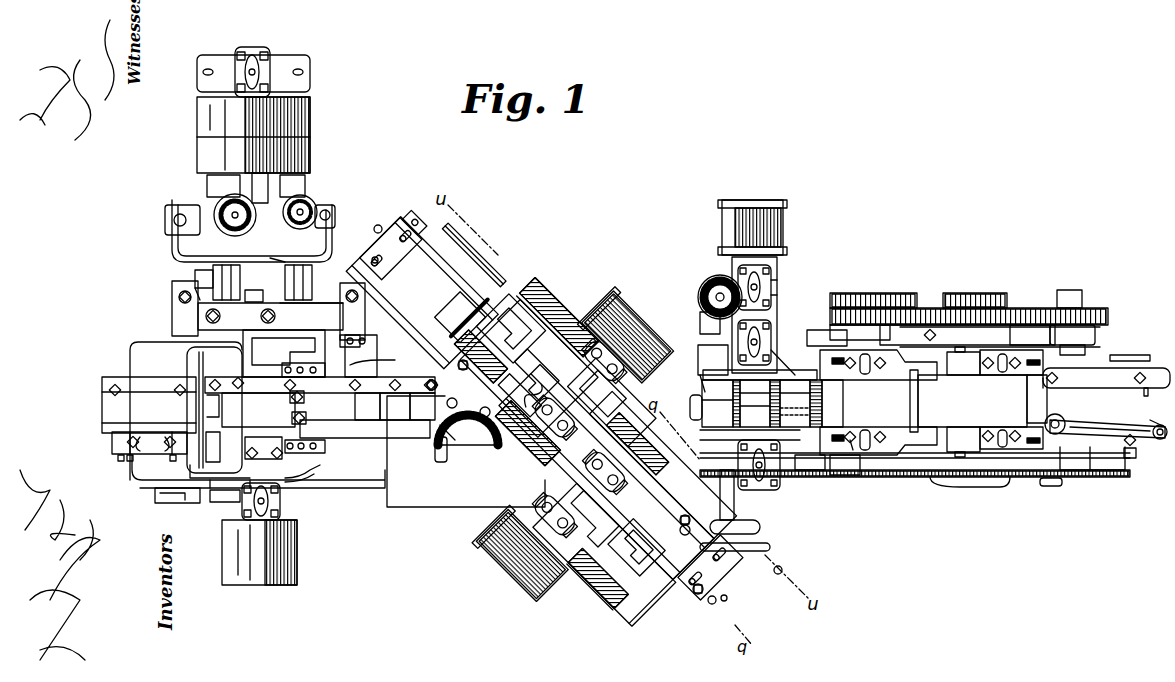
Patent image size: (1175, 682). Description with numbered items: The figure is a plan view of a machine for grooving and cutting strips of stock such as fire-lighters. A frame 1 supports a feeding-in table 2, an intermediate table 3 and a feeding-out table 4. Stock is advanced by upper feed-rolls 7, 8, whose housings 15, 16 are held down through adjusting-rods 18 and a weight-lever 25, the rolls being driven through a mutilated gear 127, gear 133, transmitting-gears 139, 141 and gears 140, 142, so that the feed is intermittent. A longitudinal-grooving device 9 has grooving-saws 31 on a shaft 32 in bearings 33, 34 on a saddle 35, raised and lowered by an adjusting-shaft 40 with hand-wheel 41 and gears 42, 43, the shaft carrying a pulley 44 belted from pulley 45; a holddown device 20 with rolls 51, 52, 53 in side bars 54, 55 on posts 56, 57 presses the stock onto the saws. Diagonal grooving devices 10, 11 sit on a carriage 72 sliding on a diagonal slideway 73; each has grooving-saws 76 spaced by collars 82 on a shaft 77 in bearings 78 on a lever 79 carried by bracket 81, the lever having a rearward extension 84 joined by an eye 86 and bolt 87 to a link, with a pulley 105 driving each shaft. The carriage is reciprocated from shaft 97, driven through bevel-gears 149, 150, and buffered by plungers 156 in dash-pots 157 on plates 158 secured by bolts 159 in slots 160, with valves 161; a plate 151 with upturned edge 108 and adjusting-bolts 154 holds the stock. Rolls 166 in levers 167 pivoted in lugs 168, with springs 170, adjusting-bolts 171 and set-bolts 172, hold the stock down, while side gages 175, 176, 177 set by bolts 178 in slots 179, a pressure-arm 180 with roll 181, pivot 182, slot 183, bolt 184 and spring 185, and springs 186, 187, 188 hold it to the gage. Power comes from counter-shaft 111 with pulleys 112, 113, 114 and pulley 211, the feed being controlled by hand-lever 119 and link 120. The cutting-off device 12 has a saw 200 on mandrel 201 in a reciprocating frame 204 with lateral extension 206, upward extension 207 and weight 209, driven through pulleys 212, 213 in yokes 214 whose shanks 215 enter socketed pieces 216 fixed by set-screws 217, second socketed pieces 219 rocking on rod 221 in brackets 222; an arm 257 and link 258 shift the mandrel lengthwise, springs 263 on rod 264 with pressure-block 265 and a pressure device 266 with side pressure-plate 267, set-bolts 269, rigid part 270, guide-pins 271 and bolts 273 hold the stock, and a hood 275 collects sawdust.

The frame 1 is at (365, 486).
The feeding-in table 2 is at (1152, 414).
The intermediate table 3 is at (612, 402).
The feeding-out table 4 is at (149, 405).
The upper feed-roll 7 is at (1037, 399).
The upper feed-roll 8 is at (832, 403).
The longitudinal-grooving device 9 is at (810, 460).
The diagonally-reciprocating grooving device 10 is at (663, 464).
The diagonally-reciprocating grooving device 11 is at (466, 451).
The cutting-off device 12 is at (228, 500).
The housing 15 is at (1000, 392).
The housing 16 is at (878, 402).
The adjusting-rod 18 is at (842, 366).
The holddown device 20 is at (778, 345).
The weight-lever 25 is at (1125, 355).
The grooving-saw 31 is at (795, 403).
The shaft 32 is at (775, 298).
The bearing 33 is at (772, 275).
The bearing 34 is at (780, 450).
The saddle 35 is at (775, 285).
The adjusting-shaft 40 is at (734, 495).
The hand-wheel 41 is at (735, 555).
The gear 42 is at (705, 312).
The gear 43 is at (712, 278).
The pulley 44 is at (784, 225).
The pulley 45 is at (176, 232).
The roll 51 is at (795, 404).
The roll 52 is at (755, 398).
The roll 53 is at (717, 408).
The side bar 54 is at (755, 411).
The side bar 55 is at (755, 403).
The post 56 is at (838, 300).
The post 57 is at (762, 493).
The carriage 72 is at (483, 283).
The slideway 73 is at (398, 310).
The grooving-saw 76 is at (606, 472).
The shaft 77 is at (556, 447).
The bearing 78 is at (590, 355).
The lever 79 is at (608, 545).
The bracket 81 is at (527, 288).
The collar 82 is at (500, 408).
The rearward extension 84 is at (536, 377).
The eye 86 is at (498, 318).
The bolt 87 is at (548, 296).
The shaft 97 is at (448, 403).
The pulley 105 is at (608, 335).
The upturned feeding-in edge 108 is at (827, 338).
The counter-shaft 111 is at (262, 50).
The pulley 112 is at (302, 152).
The loose pulley 113 is at (305, 118).
The pulley 114 is at (300, 552).
The hand-lever 119 is at (1050, 487).
The link 120 is at (925, 478).
The mutilated gear 127 is at (875, 296).
The gear 133 is at (985, 295).
The transmitting-gear 139 is at (1085, 300).
The gear 140 is at (1015, 310).
The transmitting-gear 141 is at (925, 308).
The gear 142 is at (910, 296).
The bevel-gear 149 is at (474, 448).
The bevel-gear 150 is at (448, 445).
The plate 151 is at (540, 442).
The adjusting-bolt 154 is at (572, 452).
The plunger 156 is at (456, 312).
The dash-pot 157 is at (551, 408).
The plate 158 is at (381, 226).
The bolt 159 is at (414, 230).
The slot 160 is at (712, 605).
The valve 161 is at (375, 256).
The roll 166 is at (648, 409).
The lever 167 is at (690, 365).
The lug 168 is at (705, 345).
The spring 170 is at (357, 436).
The adjusting-bolt 171 is at (368, 352).
The set-bolt 172 is at (379, 392).
The side gage 175 is at (1152, 368).
The side gage 176 is at (320, 386).
The side gage 177 is at (123, 383).
The bolt 178 is at (180, 385).
The slot 179 is at (1155, 394).
The side pressure-arm 180 is at (1085, 422).
The roll 181 is at (1058, 414).
The pivot 182 is at (1160, 440).
The slot 183 is at (1130, 458).
The bolt 184 is at (1107, 470).
The spring 185 is at (1100, 425).
The spring 186 is at (872, 402).
The spring 187 is at (690, 412).
The spring 188 is at (420, 450).
The cutting-off saw 200 is at (208, 467).
The mandrel 201 is at (221, 447).
The reciprocating frame 204 is at (270, 316).
The lateral extension 206 is at (325, 347).
The upward extension 207 is at (280, 313).
The weight 209 is at (258, 190).
The pulley 211 is at (305, 182).
The pulley 212 is at (215, 203).
The pulley 213 is at (312, 200).
The yoke 214 is at (178, 218).
The shank 215 is at (200, 280).
The socketed piece 216 is at (324, 272).
The set-screw 217 is at (290, 253).
The second socketed piece 219 is at (255, 295).
The rod 221 is at (198, 277).
The bracket 222 is at (178, 318).
The arm 257 is at (160, 494).
The link 258 is at (310, 481).
The spring 263 is at (262, 402).
The rod 264 is at (317, 410).
The pressure-block 265 is at (222, 400).
The pressure device 266 is at (112, 444).
The side pressure-plate 267 is at (110, 422).
The set-bolt 269 is at (130, 461).
The rigid part 270 is at (155, 440).
The guide-pin 271 is at (121, 461).
The bolt 273 is at (130, 446).
The hood 275 is at (225, 496).